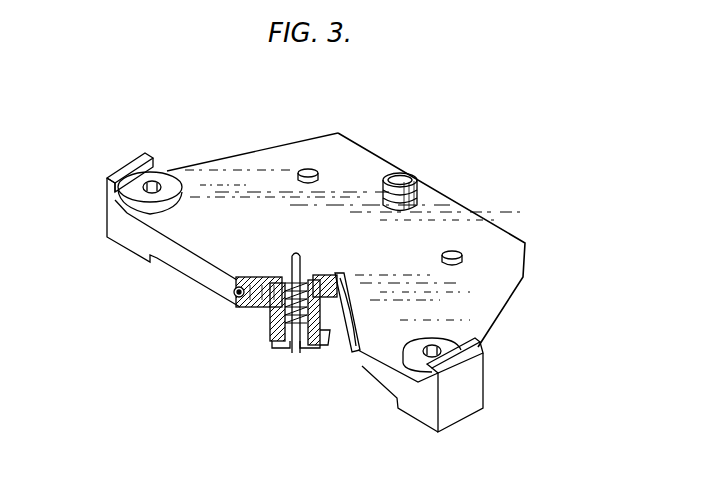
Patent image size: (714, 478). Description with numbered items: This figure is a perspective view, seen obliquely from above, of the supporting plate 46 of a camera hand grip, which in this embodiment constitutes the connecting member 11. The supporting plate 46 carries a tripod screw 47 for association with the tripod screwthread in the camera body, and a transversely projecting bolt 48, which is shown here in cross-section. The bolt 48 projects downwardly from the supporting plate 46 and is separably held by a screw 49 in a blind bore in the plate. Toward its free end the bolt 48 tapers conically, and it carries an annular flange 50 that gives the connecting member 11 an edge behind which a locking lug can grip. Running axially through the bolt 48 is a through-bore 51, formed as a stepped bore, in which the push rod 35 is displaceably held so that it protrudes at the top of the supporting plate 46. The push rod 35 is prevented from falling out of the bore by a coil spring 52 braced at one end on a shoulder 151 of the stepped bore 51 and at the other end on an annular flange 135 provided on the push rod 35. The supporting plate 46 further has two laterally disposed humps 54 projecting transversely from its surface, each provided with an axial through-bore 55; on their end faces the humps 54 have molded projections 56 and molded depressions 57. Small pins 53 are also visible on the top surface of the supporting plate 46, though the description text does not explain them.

The connecting member 11 is at (284, 386).
The push rod 35 is at (290, 262).
The supporting plate 46 is at (437, 212).
The tripod screw 47 is at (372, 193).
The bolt 48 is at (284, 347).
The screw 49 is at (238, 292).
The annular flange 50 is at (270, 340).
The axial through-bore 51 is at (322, 325).
The coil spring 52 is at (343, 292).
The locating pin 53 is at (308, 170).
The humps 54 is at (118, 207).
The axial through-bore 55 is at (157, 186).
The molded projections 56 is at (122, 172).
The molded depressions 57 is at (136, 187).
The annular flange 135 is at (302, 262).
The shoulder 151 is at (265, 325).